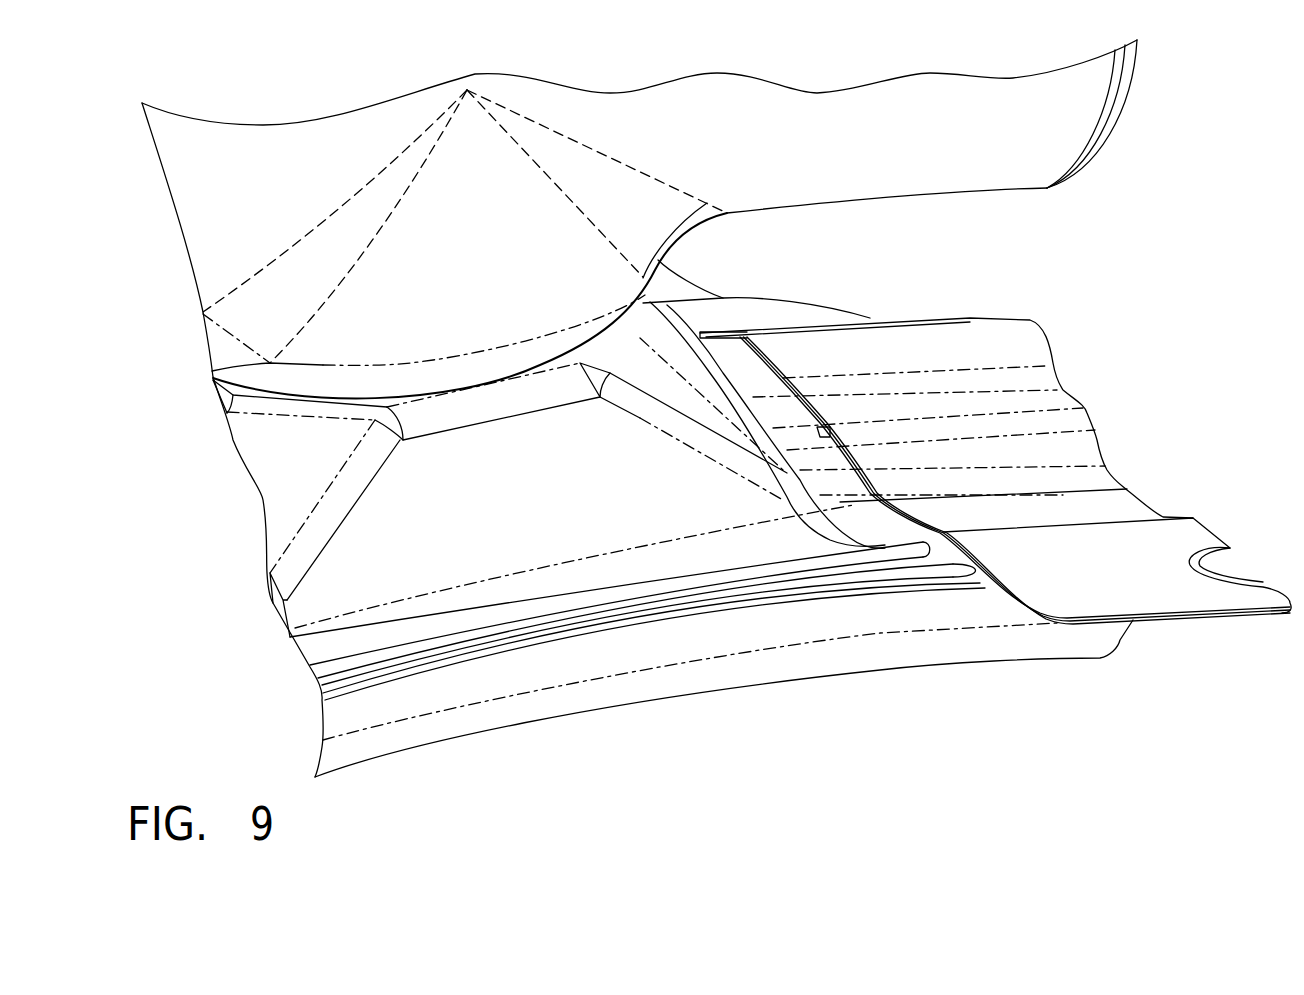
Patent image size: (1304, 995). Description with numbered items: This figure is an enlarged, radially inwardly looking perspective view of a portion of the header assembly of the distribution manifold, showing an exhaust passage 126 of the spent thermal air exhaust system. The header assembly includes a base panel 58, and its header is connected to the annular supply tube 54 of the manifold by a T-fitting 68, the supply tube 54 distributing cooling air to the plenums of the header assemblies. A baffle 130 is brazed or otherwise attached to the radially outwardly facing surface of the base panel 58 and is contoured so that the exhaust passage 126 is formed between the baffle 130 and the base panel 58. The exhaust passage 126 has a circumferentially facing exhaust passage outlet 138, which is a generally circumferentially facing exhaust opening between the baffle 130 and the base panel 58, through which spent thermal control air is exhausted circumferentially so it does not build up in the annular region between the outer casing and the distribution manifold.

The annular supply tube 54 is at (1036, 131).
The T-fitting 68 is at (506, 229).
The exhaust passage 126 is at (787, 377).
The baffle 130 is at (1017, 337).
The exhaust passage outlet 138 is at (903, 527).
The base panel 58 is at (952, 555).